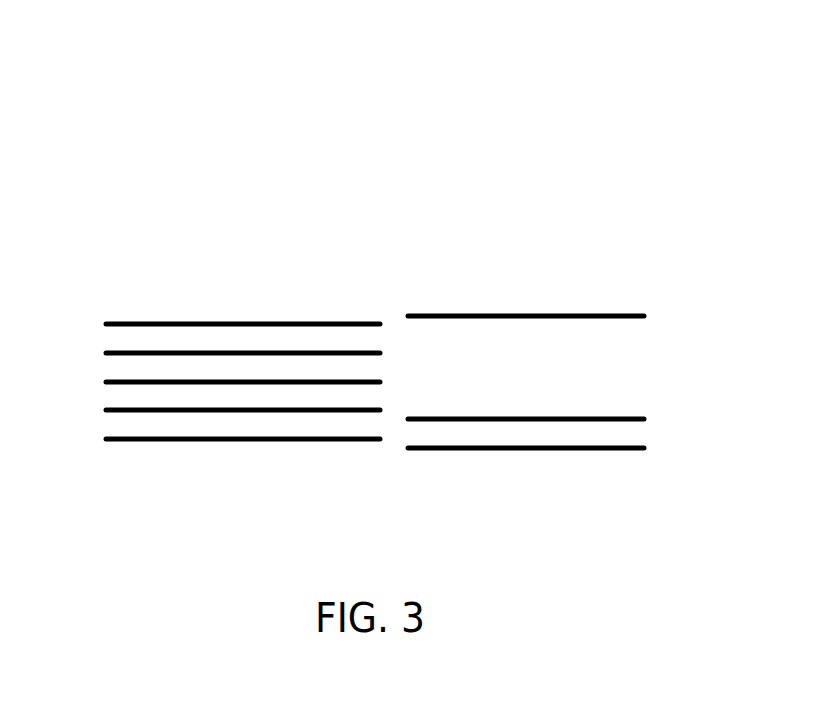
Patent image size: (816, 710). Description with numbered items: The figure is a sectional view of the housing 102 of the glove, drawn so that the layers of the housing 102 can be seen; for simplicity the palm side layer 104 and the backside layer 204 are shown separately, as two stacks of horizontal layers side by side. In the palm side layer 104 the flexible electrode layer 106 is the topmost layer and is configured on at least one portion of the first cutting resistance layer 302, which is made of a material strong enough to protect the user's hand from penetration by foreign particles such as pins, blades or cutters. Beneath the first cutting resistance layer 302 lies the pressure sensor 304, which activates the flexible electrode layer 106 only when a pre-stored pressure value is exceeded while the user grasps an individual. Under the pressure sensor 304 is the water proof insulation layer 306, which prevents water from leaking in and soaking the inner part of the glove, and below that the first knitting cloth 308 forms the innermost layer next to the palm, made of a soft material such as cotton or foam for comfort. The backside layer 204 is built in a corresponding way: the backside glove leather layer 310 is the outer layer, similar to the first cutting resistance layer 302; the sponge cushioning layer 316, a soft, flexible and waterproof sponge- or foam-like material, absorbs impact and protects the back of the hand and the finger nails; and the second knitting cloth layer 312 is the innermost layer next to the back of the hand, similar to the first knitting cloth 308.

The housing 102 is at (335, 76).
The palm side layer 104 is at (245, 264).
The backside layer 204 is at (535, 264).
The flexible electrode layer 106 is at (120, 324).
The first cutting resistance layer 302 is at (120, 353).
The pressure sensor 304 is at (120, 382).
The water proof insulation layer 306 is at (120, 410).
The first knitting cloth 308 is at (120, 439).
The backside glove leather layer 310 is at (632, 316).
The sponge cushioning layer 316 is at (632, 419).
The second knitting cloth layer 312 is at (632, 448).